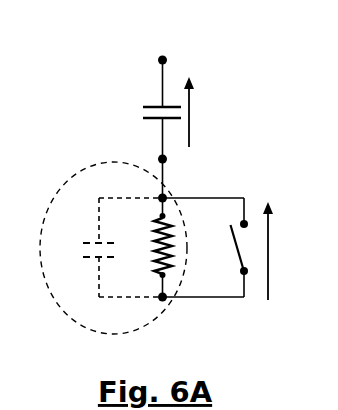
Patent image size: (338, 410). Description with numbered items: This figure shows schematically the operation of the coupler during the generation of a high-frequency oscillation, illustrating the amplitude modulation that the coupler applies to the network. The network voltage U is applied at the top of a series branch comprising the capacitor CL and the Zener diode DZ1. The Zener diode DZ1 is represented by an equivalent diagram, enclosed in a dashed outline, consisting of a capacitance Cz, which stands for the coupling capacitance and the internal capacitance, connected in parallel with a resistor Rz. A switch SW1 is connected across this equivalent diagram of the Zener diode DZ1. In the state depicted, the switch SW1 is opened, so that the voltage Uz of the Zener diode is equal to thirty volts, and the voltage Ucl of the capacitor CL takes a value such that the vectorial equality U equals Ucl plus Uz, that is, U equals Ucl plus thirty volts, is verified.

The network voltage U is at (164, 43).
The capacitor CL is at (146, 120).
The voltage of the capacitor CL Ucl is at (204, 112).
The capacitance Cz is at (105, 247).
The resistor Rz is at (149, 245).
The switch SW1 is at (220, 247).
The voltage of the Zener diode Uz is at (289, 251).
The Zener diode DZ1 is at (155, 318).